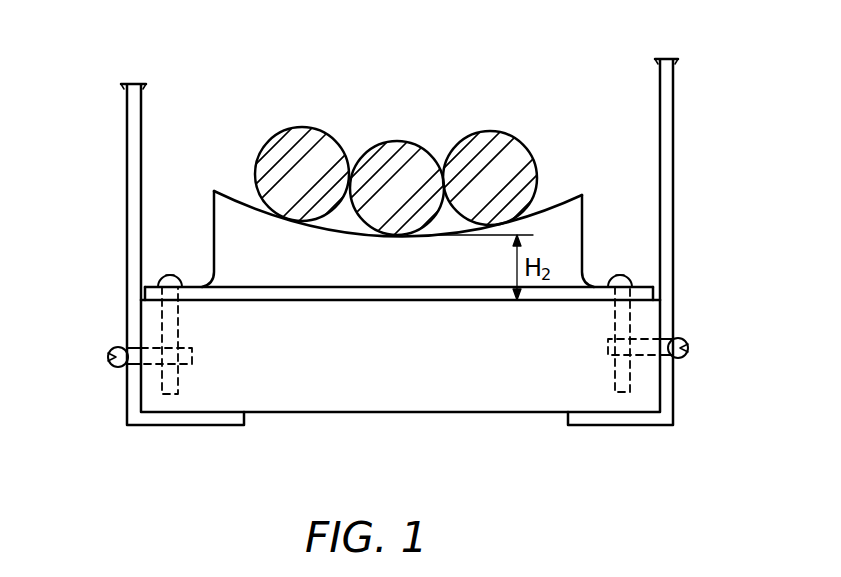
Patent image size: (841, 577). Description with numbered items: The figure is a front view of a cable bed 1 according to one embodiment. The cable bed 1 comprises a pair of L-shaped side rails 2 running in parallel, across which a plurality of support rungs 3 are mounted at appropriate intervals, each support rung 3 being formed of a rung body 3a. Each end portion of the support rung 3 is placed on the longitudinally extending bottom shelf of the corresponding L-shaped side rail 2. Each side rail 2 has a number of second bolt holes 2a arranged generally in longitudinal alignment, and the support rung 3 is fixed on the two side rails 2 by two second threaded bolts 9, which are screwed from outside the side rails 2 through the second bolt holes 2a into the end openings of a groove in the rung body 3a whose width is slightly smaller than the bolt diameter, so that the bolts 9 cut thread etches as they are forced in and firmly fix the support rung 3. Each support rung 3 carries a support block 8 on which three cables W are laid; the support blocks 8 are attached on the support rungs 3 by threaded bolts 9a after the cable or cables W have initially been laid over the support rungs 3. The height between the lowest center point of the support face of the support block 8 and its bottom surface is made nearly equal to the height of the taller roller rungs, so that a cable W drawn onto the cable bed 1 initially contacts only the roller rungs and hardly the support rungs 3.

The cable bed 1 is at (397, 212).
The side rail 2 is at (127, 140).
The second bolt hole 2a is at (147, 358).
The support rung 3 is at (400, 398).
The rung body 3a is at (472, 375).
The support block 8 is at (544, 223).
The second threaded bolt 9 is at (120, 346).
The threaded bolt 9a is at (172, 270).
The cable W is at (505, 138).